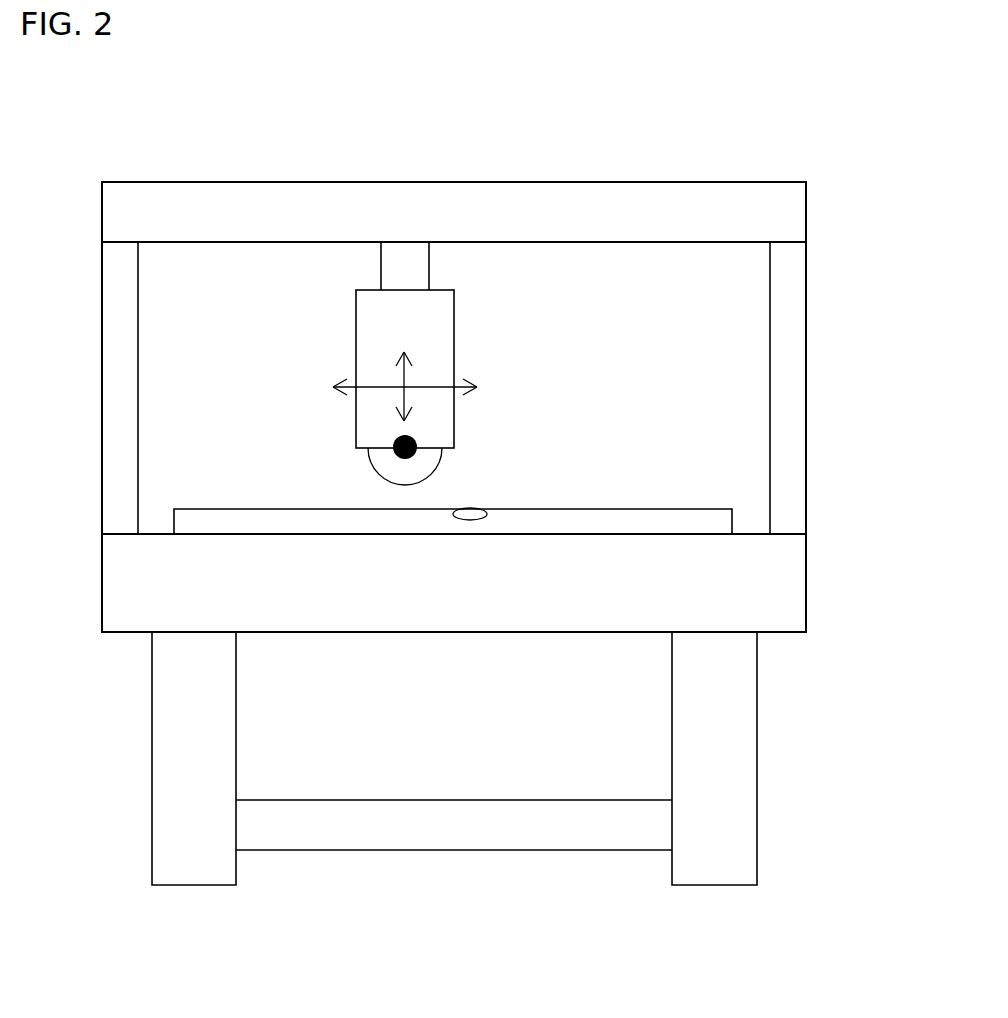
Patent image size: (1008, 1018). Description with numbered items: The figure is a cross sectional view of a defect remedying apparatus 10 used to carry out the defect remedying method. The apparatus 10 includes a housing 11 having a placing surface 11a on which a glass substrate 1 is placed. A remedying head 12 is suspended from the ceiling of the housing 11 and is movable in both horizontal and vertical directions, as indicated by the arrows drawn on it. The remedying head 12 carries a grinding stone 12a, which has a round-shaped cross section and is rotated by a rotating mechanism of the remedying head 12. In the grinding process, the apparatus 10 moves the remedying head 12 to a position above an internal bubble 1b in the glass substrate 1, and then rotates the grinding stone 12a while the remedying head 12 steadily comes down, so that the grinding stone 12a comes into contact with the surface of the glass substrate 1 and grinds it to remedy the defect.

The defect remedying apparatus 10 is at (857, 220).
The housing 11 is at (806, 583).
The placing surface 11a is at (793, 533).
The glass substrate 1 is at (733, 515).
The internal bubble 1b is at (485, 514).
The remedying head 12 is at (454, 365).
The grinding stone 12a is at (378, 475).